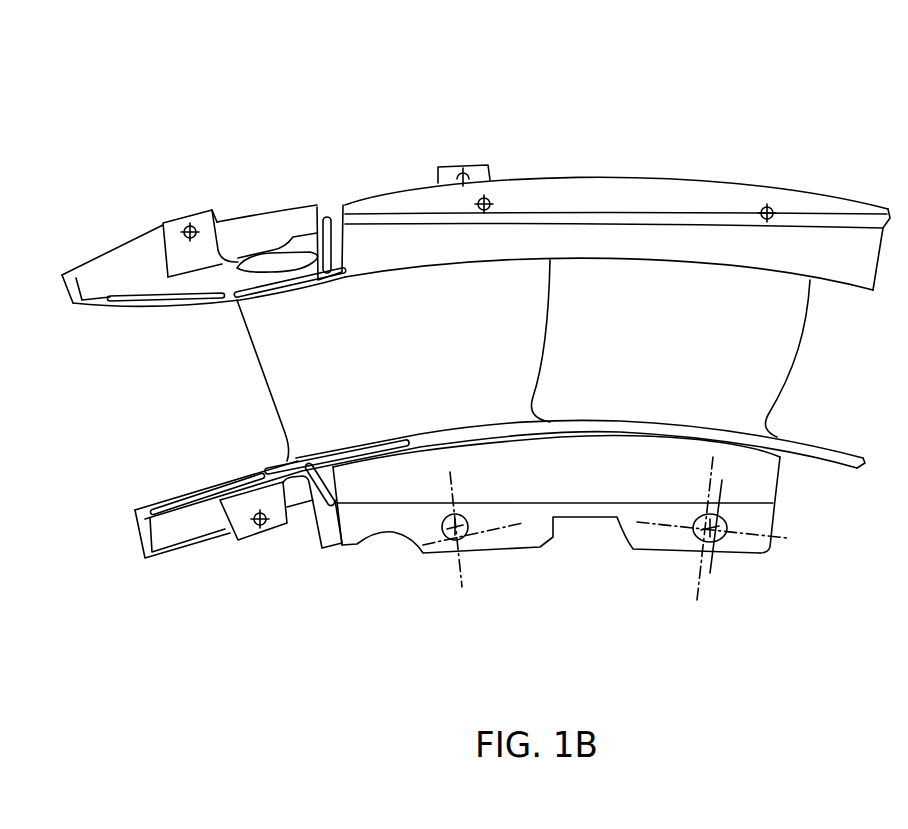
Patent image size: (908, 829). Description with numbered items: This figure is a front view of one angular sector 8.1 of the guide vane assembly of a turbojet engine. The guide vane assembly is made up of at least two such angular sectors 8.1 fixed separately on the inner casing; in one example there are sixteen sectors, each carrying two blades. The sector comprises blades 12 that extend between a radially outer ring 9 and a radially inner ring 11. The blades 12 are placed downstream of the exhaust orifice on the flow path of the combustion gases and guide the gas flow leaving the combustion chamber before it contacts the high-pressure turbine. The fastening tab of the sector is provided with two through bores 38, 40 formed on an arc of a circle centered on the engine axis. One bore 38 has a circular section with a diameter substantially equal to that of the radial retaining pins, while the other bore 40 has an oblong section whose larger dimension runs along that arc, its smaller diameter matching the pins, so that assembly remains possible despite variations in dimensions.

The angular sector 8.1 is at (262, 606).
The radially outer ring 9 is at (613, 193).
The radially inner ring 11 is at (372, 522).
The blade 12 is at (282, 372).
The through bore 38 is at (466, 538).
The through bore 40 is at (724, 537).